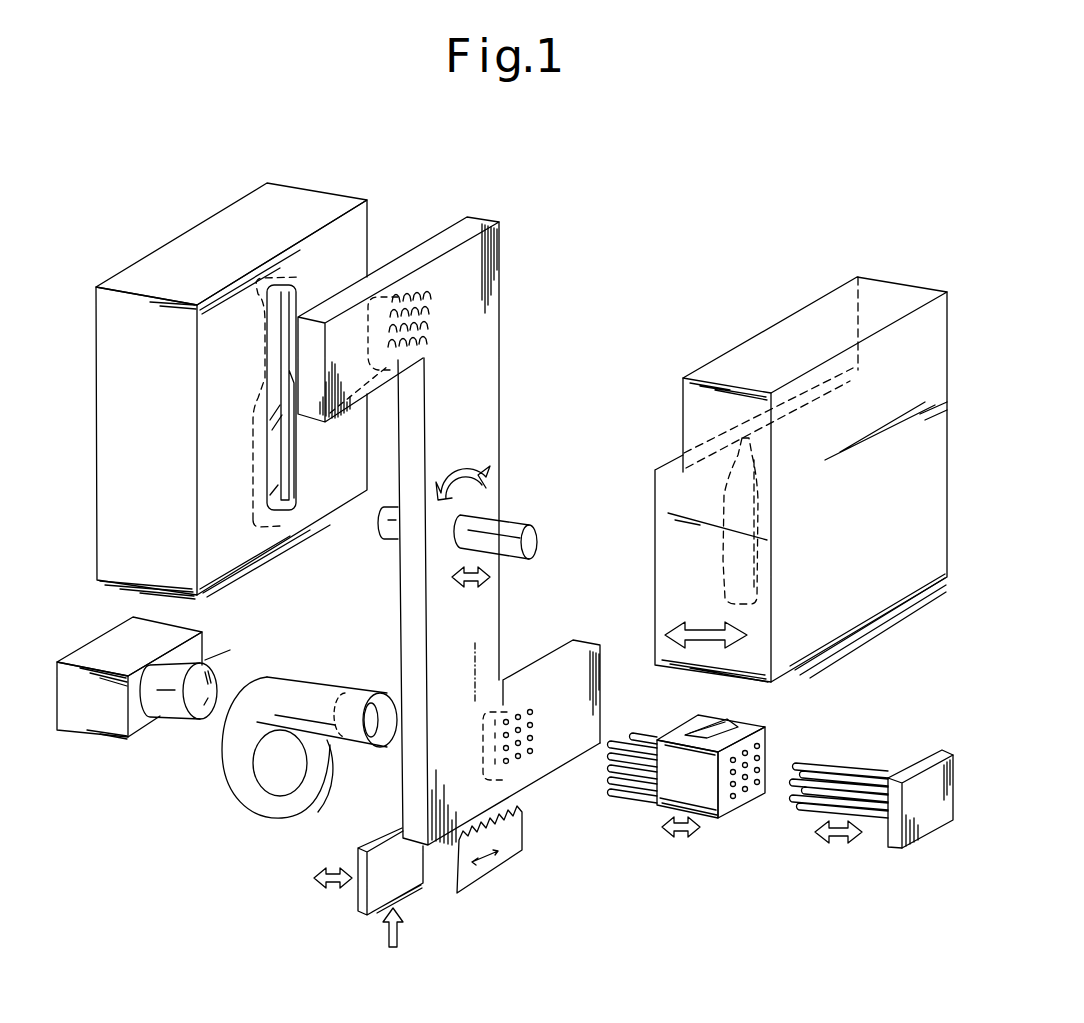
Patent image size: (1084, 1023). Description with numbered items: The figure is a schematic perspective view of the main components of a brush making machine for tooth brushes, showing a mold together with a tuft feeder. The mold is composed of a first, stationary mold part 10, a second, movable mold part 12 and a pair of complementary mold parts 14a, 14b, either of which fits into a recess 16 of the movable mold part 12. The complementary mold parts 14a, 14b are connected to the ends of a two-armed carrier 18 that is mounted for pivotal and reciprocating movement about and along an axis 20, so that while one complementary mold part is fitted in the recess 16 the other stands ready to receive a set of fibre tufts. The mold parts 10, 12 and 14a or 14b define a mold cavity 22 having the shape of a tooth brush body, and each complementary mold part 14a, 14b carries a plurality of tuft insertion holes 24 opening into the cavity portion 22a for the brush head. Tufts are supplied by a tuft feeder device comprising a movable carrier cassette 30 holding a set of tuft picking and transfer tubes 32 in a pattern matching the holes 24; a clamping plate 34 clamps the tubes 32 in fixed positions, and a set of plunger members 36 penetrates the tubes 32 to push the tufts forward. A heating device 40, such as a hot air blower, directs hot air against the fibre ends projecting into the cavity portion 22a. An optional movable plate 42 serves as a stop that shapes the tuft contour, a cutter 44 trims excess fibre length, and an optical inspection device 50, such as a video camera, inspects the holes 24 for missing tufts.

The first, stationary mold part 10 is at (200, 240).
The second, movable mold part 12 is at (797, 347).
The complementary mold part 14a is at (345, 300).
The complementary mold part 14b is at (566, 722).
The recess 16 is at (683, 428).
The two-armed carrier 18 is at (462, 403).
The axis 20 is at (515, 527).
The mold cavity 22 is at (290, 512).
The cavity portion 22a is at (395, 282).
The tuft insertion holes 24 is at (438, 348).
The carrier cassette 30 is at (710, 800).
The tuft picking and transfer tubes 32 is at (640, 740).
The clamping plate 34 is at (722, 730).
The plunger members 36 is at (825, 762).
The heating device 40 is at (263, 808).
The movable plate 42 is at (358, 895).
The cutter 44 is at (487, 862).
The optical inspection device 50 is at (140, 725).